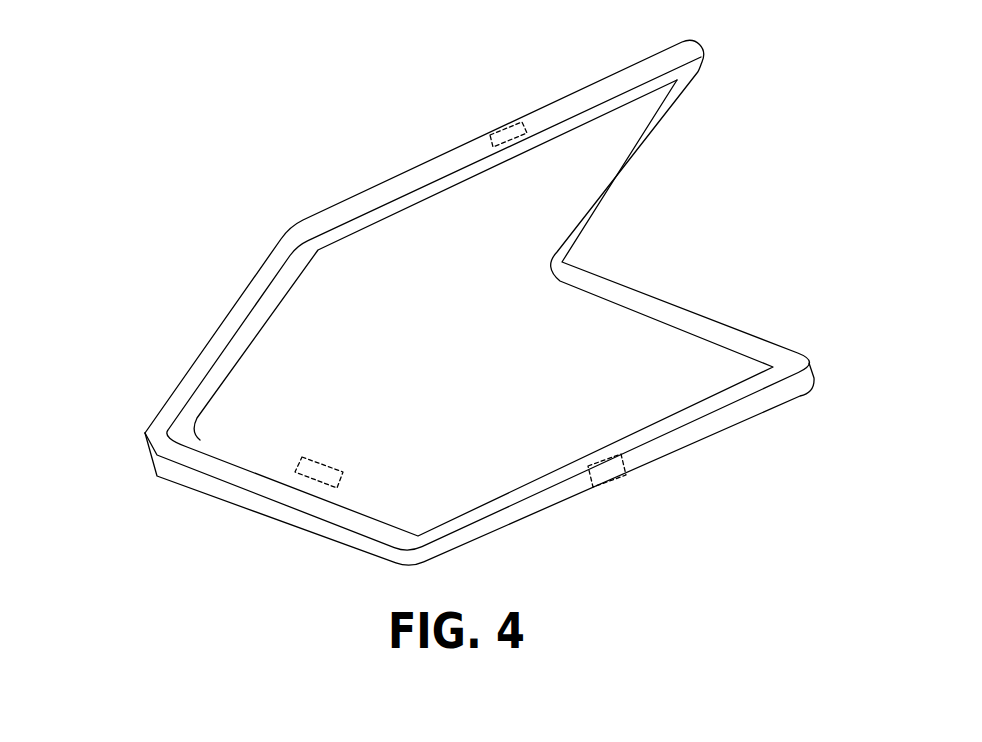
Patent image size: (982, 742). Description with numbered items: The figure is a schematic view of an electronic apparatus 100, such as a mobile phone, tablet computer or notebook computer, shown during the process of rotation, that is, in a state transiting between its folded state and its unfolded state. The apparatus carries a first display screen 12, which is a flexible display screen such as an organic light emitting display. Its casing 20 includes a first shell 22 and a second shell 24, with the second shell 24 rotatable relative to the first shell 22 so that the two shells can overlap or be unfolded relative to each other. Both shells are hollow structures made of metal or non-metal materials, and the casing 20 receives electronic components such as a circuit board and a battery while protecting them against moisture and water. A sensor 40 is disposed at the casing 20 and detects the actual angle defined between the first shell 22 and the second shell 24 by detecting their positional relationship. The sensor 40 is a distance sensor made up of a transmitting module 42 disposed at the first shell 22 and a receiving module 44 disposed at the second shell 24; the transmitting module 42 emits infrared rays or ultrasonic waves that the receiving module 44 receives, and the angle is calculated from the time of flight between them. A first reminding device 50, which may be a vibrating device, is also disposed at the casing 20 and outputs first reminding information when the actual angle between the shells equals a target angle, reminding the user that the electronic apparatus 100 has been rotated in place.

The electronic apparatus 100 is at (435, 302).
The first display screen 12 is at (702, 363).
The casing 20 is at (430, 302).
The first shell 22 is at (177, 393).
The second shell 24 is at (190, 480).
The sensor 40 is at (658, 325).
The transmitting module 42 is at (627, 478).
The receiving module 44 is at (510, 137).
The first reminding device 50 is at (313, 477).